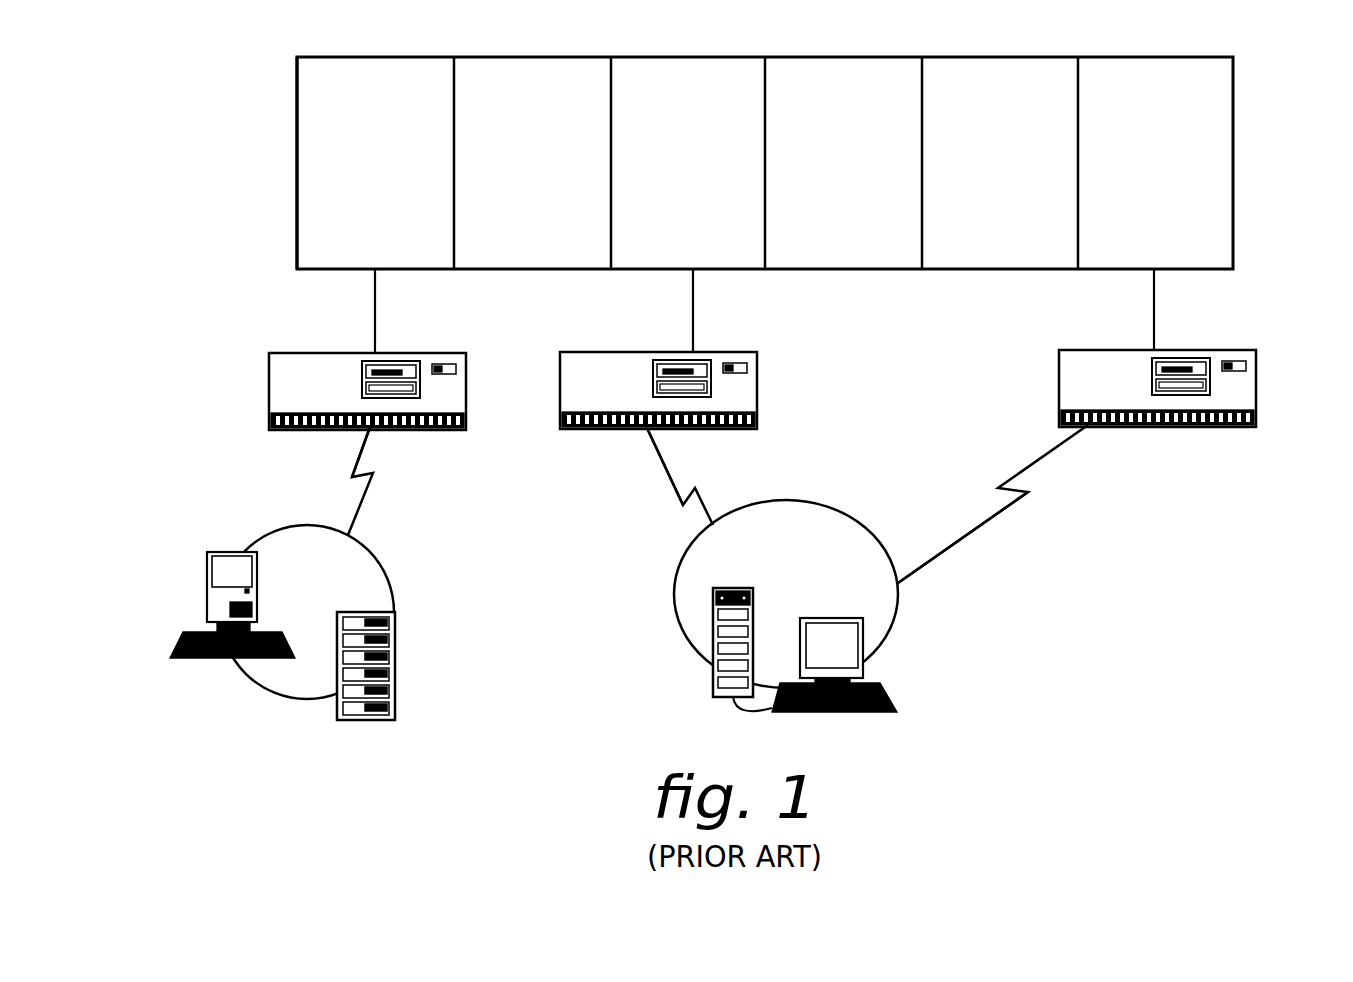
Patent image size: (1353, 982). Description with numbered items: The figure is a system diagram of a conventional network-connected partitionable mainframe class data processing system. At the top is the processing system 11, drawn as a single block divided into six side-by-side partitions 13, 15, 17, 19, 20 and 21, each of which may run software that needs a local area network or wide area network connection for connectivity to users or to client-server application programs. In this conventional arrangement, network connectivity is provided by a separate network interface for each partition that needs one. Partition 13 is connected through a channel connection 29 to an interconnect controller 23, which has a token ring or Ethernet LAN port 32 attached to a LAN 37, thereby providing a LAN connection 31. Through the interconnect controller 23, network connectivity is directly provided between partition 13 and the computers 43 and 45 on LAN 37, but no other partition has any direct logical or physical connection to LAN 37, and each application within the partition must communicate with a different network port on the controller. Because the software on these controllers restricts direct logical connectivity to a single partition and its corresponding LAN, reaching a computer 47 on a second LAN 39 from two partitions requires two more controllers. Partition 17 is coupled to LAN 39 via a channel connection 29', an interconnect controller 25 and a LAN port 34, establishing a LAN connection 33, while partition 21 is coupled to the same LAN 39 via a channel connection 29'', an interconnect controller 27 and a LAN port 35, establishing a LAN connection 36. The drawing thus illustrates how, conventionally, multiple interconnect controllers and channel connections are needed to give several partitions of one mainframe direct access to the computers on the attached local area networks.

The processing system 11 is at (1233, 150).
The partition 13 is at (360, 173).
The partition 15 is at (506, 173).
The partition 17 is at (656, 173).
The partition 19 is at (830, 173).
The partition 20 is at (980, 173).
The partition 21 is at (1129, 173).
The IBM 3172 Interconnect Controller 23 is at (269, 385).
The IBM 3172 Interconnect Controller 25 is at (757, 378).
The IBM 3172 Interconnect Controller 27 is at (1255, 388).
The channel connection 29 is at (281, 311).
The channel connection 29' is at (776, 310).
The channel connection 29'' is at (1210, 309).
The LAN connection 31 is at (357, 528).
The LAN port 32 is at (373, 430).
The LAN connection 33 is at (663, 482).
The LAN port 34 is at (652, 432).
The LAN port 35 is at (1090, 427).
The LAN connection 36 is at (970, 535).
The LAN 37 is at (395, 585).
The LAN 39 is at (860, 522).
The computer 43 is at (207, 565).
The computer 45 is at (395, 690).
The computer 47 is at (863, 668).